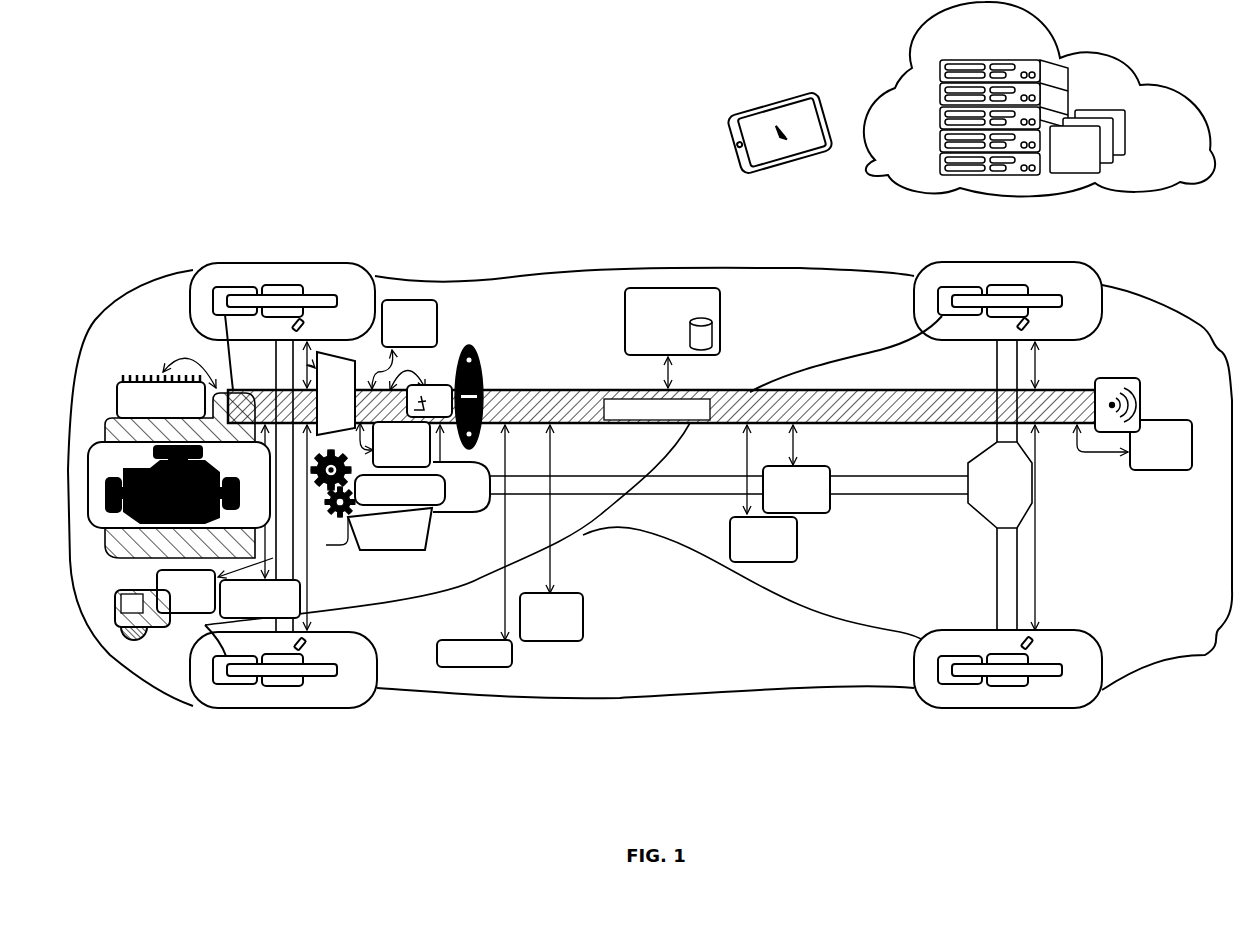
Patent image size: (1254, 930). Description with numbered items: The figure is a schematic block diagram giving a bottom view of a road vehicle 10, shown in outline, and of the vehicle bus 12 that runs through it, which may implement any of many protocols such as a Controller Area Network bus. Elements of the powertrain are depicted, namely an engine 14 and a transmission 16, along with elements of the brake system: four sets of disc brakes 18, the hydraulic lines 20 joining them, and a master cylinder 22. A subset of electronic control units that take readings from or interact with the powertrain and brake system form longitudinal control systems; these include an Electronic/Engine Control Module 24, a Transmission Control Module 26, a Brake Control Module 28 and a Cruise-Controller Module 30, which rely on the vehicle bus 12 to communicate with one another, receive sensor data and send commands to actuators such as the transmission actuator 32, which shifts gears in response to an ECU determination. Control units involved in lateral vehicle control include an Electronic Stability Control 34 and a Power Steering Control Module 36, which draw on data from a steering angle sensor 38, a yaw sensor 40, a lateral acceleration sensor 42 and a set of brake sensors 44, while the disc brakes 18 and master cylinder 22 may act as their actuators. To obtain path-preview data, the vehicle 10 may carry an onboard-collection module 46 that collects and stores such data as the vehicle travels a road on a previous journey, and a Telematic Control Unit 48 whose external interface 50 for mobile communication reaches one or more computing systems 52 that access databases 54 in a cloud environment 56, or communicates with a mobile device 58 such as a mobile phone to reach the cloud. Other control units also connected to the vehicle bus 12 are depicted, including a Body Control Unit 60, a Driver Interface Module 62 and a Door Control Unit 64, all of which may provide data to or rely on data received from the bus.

The vehicle 10 is at (145, 708).
The vehicle bus 12 is at (474, 344).
The engine 14 is at (179, 475).
The transmission 16 is at (333, 497).
The disc brakes 18 is at (937, 686).
The hydraulic lines 20 is at (850, 617).
The master cylinder 22 is at (142, 615).
The Electronic/Engine Control Module (ECM) 24 is at (161, 396).
The Transmission Control Module (TCM) 26 is at (422, 487).
The Brake Control Module (BCM) 28 is at (186, 591).
The Cruise-Controller Module (CCM) 30 is at (409, 323).
The transmission actuator 32 is at (390, 529).
The Electronic Stability Control (ESC) 34 is at (260, 599).
The Power Steering Control Module (PSCM) 36 is at (401, 444).
The steering angle sensor 38 is at (429, 401).
The yaw sensor 40 is at (763, 539).
The lateral acceleration sensor 42 is at (796, 489).
The brake sensors 44 is at (1038, 648).
The onboard-collection module 46 is at (672, 321).
The Telematic Control Unit (TCU) 48 is at (1161, 445).
The external interface 50 is at (1140, 378).
The computing systems 52 is at (940, 157).
The databases 54 is at (1125, 147).
The cloud environment 56 is at (1210, 185).
The mobile device 58 is at (805, 158).
The Body Control Unit (BCU) 60 is at (551, 617).
The Driver Interface Module (DIM) 62 is at (336, 393).
The Door Control Unit (DCU) 64 is at (474, 653).